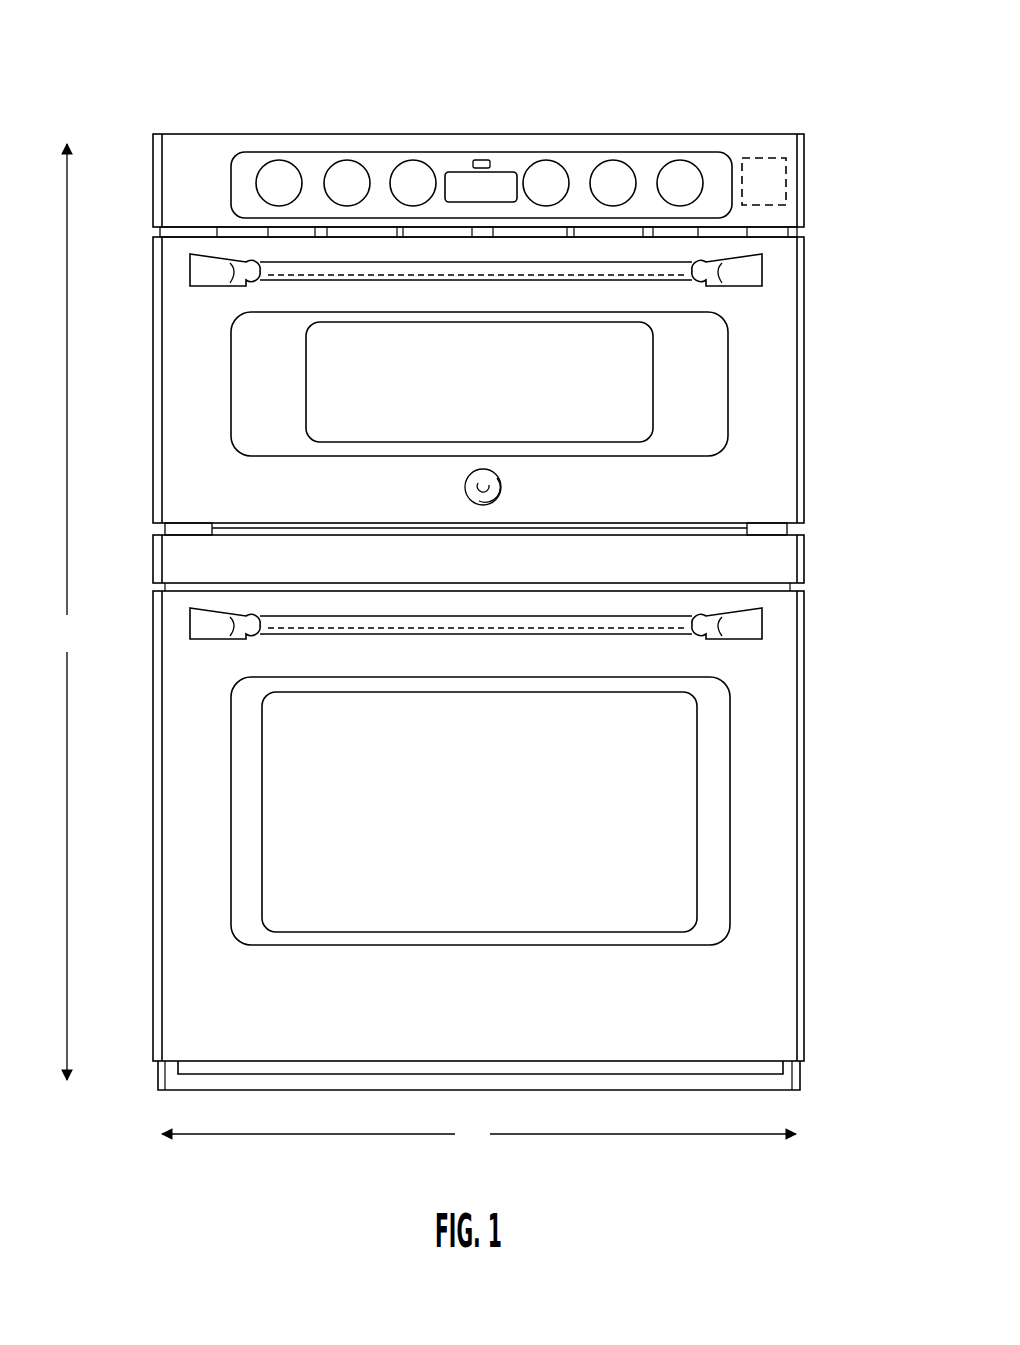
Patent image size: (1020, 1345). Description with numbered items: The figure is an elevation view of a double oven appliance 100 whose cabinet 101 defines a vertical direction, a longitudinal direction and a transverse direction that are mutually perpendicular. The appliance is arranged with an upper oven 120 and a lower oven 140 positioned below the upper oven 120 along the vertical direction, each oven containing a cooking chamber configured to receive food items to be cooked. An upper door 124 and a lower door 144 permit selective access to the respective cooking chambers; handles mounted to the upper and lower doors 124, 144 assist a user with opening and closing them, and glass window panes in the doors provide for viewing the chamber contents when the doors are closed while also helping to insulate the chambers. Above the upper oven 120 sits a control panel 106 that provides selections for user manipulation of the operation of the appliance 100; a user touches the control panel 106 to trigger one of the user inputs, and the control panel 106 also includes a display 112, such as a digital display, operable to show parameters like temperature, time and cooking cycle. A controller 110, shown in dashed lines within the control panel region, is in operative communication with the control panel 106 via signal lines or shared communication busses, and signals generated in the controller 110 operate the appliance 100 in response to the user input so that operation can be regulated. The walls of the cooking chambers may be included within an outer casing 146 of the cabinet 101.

The oven appliance 100 is at (232, 70).
The cabinet 101 is at (152, 175).
The control panel 106 is at (641, 142).
The controller 110 is at (762, 158).
The display 112 is at (475, 185).
The upper oven 120 is at (818, 359).
The upper door 124 is at (777, 500).
The lower oven 140 is at (818, 788).
The lower door 144 is at (778, 1028).
The outer casing 146 is at (800, 233).